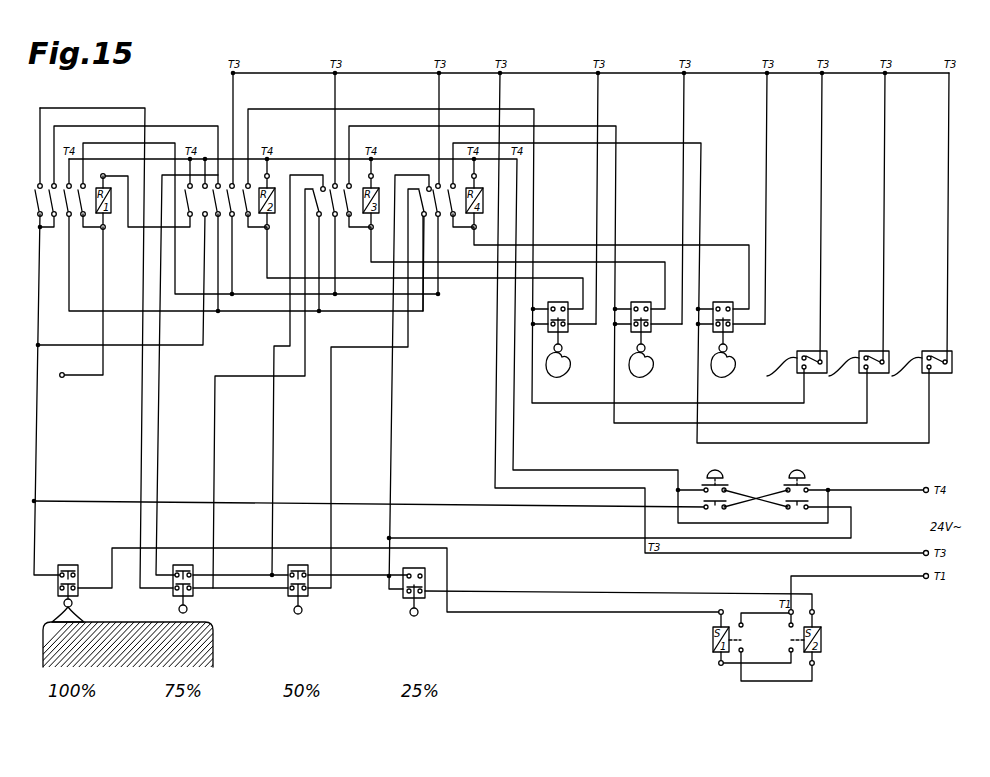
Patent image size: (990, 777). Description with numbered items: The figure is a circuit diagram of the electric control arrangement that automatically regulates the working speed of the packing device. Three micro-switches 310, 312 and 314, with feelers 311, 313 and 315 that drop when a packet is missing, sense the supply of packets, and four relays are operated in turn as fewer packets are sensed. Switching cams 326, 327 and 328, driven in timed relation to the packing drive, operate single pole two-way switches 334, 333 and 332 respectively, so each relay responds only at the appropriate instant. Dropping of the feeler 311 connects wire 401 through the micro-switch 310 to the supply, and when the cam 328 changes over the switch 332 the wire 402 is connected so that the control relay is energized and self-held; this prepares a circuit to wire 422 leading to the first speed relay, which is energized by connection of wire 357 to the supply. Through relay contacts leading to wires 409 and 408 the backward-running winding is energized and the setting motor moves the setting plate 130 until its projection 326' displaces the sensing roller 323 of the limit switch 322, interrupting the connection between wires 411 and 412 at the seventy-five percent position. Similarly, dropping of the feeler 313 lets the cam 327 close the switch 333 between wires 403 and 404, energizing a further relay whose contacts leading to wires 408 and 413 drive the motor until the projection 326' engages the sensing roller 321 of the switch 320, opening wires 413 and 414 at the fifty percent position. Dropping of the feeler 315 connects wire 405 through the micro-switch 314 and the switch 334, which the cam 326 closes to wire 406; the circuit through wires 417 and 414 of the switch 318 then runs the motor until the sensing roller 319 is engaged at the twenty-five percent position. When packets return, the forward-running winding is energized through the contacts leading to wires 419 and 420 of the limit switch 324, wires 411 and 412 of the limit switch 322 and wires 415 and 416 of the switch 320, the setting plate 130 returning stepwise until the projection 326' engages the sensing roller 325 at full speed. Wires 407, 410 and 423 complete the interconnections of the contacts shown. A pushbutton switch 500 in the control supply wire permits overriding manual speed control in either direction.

The setting plate 130 is at (213, 637).
The first micro-switch 310 is at (827, 356).
The feeler 311 is at (780, 373).
The second micro-switch 312 is at (889, 356).
The feeler 313 is at (844, 373).
The third micro-switch 314 is at (950, 356).
The feeler 315 is at (907, 373).
The limit switch 318 is at (413, 580).
The feeler 319 is at (403, 613).
The limit switch 320 is at (347, 578).
The feeler 321 is at (287, 611).
The limit switch 322 is at (182, 577).
The feeler 323 is at (172, 610).
The limit switch 324 is at (67, 575).
The feeler 325 is at (55, 604).
The projection 326' is at (84, 614).
The switching cam 326 is at (723, 366).
The switching cam 327 is at (641, 366).
The switching cam 328 is at (558, 366).
The switch 332 is at (571, 315).
The switch 333 is at (656, 315).
The switch 334 is at (738, 315).
The wire 357 is at (79, 302).
The wire 401 is at (535, 253).
The wire 402 is at (416, 261).
The wire 403 is at (617, 267).
The wire 404 is at (509, 261).
The wire 405 is at (702, 286).
The wire 406 is at (604, 261).
The conductor 407 is at (273, 212).
The wire 408 is at (243, 249).
The wire 409 is at (198, 368).
The conductor 410 is at (240, 567).
The wire 411 is at (97, 354).
The wire 412 is at (263, 388).
The wire 413 is at (289, 369).
The wire 414 is at (613, 375).
The wire 415 is at (240, 594).
The wire 416 is at (367, 388).
The wire 417 is at (633, 603).
The wire 419 is at (373, 385).
The wire 420 is at (402, 587).
The wire 422 is at (153, 200).
The conductor 423 is at (134, 164).
The switch 500 is at (753, 482).